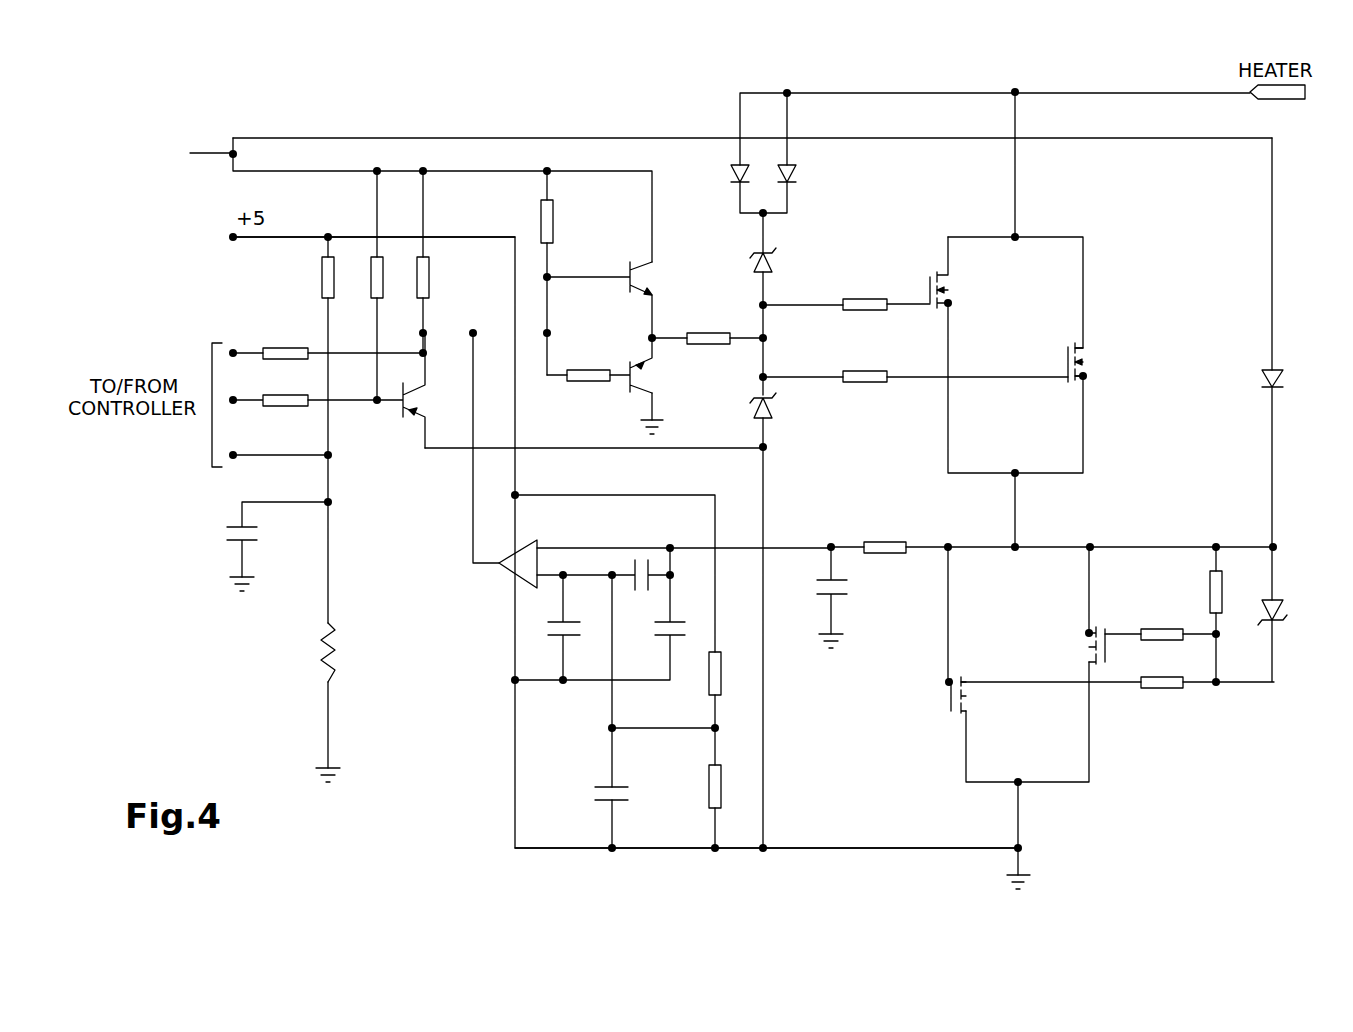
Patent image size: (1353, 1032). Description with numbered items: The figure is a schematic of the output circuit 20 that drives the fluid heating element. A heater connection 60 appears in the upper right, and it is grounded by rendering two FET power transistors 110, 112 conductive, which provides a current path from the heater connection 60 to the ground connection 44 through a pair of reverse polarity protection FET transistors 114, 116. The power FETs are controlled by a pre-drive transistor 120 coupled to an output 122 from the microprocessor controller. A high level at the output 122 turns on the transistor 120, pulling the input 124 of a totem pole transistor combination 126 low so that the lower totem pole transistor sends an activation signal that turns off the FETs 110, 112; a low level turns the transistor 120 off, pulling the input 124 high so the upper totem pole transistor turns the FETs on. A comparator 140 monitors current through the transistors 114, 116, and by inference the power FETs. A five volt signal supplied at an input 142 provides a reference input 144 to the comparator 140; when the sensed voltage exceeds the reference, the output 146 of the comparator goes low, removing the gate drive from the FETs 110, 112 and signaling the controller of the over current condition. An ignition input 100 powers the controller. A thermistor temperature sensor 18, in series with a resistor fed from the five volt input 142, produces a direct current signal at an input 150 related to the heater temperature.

The ignition input 100 is at (212, 155).
The five volt input 142 is at (268, 240).
The output from the microprocessor controller 122 is at (247, 402).
The input 150 is at (253, 455).
The pre-drive transistor 120 is at (405, 418).
The input of totem pole transistor combination 124 is at (547, 310).
The totem pole transistor combination 126 is at (676, 260).
The output of the comparator 146 is at (473, 410).
The comparator 140 is at (520, 560).
The reference input 144 is at (612, 693).
The output circuit 20 is at (565, 875).
The thermistor temperature sensor 18 is at (327, 652).
The FET power transistor 110 is at (950, 285).
The FET power transistor 112 is at (1085, 357).
The reverse polarity protection FET transistor 116 is at (1088, 653).
The reverse polarity protection FET transistor 114 is at (949, 698).
The ground connection 44 is at (1029, 875).
The heater connection 60 is at (1297, 100).